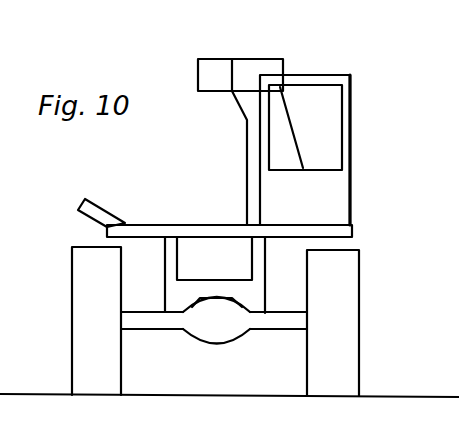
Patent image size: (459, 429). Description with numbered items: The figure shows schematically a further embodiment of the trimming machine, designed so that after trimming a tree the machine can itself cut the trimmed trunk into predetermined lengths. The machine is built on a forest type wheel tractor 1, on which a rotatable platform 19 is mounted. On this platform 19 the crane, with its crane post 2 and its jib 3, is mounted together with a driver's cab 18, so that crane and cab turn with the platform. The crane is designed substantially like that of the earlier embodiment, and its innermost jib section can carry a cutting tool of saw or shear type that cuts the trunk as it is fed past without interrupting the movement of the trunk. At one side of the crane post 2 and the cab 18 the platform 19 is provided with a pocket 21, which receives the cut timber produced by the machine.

The forest type wheel tractor 1 is at (297, 322).
The crane post 2 is at (287, 133).
The jib 3 is at (213, 72).
The driver's cab 18 is at (348, 192).
The rotatable platform 19 is at (352, 240).
The pocket 21 is at (160, 227).